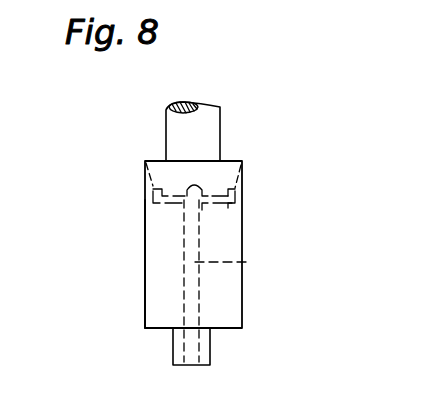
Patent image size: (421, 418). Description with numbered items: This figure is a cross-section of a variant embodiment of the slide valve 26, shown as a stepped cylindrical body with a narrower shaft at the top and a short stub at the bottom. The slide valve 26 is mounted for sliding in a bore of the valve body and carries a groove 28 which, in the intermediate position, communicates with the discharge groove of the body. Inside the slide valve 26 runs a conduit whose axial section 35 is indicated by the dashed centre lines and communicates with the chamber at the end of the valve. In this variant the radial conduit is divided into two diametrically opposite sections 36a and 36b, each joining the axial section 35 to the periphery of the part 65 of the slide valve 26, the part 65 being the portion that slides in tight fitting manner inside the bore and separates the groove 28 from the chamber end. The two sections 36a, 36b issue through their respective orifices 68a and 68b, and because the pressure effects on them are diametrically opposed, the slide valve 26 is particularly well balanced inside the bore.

The groove 28 is at (231, 159).
The slide valve 26 is at (229, 313).
The part of the slide valve 65 is at (144, 252).
The axial section 35 is at (263, 262).
The first radial section 36a is at (145, 167).
The second radial section 36b is at (245, 177).
The first orifice 68a is at (146, 191).
The second orifice 68b is at (246, 196).